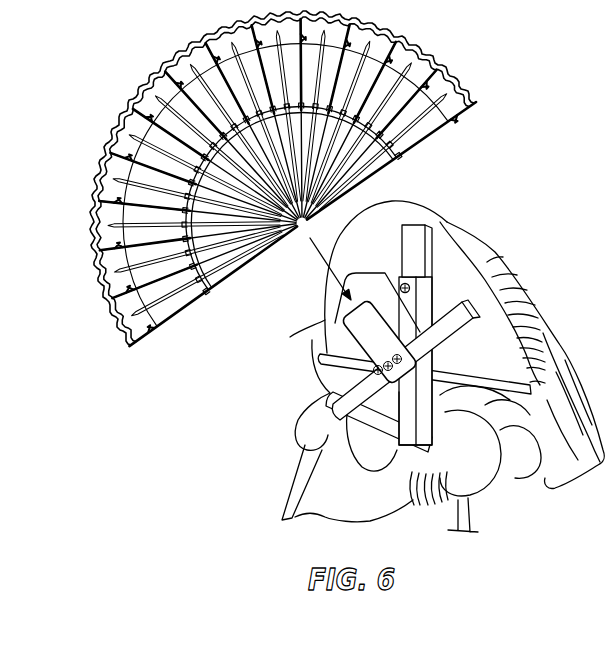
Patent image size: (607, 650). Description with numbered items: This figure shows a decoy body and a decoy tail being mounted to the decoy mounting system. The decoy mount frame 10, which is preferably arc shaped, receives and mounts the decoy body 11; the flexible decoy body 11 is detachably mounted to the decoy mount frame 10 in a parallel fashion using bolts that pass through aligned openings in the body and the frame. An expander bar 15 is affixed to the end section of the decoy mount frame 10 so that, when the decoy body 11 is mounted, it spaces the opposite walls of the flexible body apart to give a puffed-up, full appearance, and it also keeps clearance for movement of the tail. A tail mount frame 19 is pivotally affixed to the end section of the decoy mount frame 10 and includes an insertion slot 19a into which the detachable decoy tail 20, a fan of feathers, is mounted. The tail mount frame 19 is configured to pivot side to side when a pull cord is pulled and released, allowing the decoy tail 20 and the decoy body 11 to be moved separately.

The detachable decoy tail 20 is at (92, 222).
The decoy body 11 is at (488, 238).
The tail mount frame 19 is at (335, 327).
The insertion slot 19a is at (369, 275).
The decoy mount frame 10 is at (417, 242).
The expander bar 15 is at (447, 368).